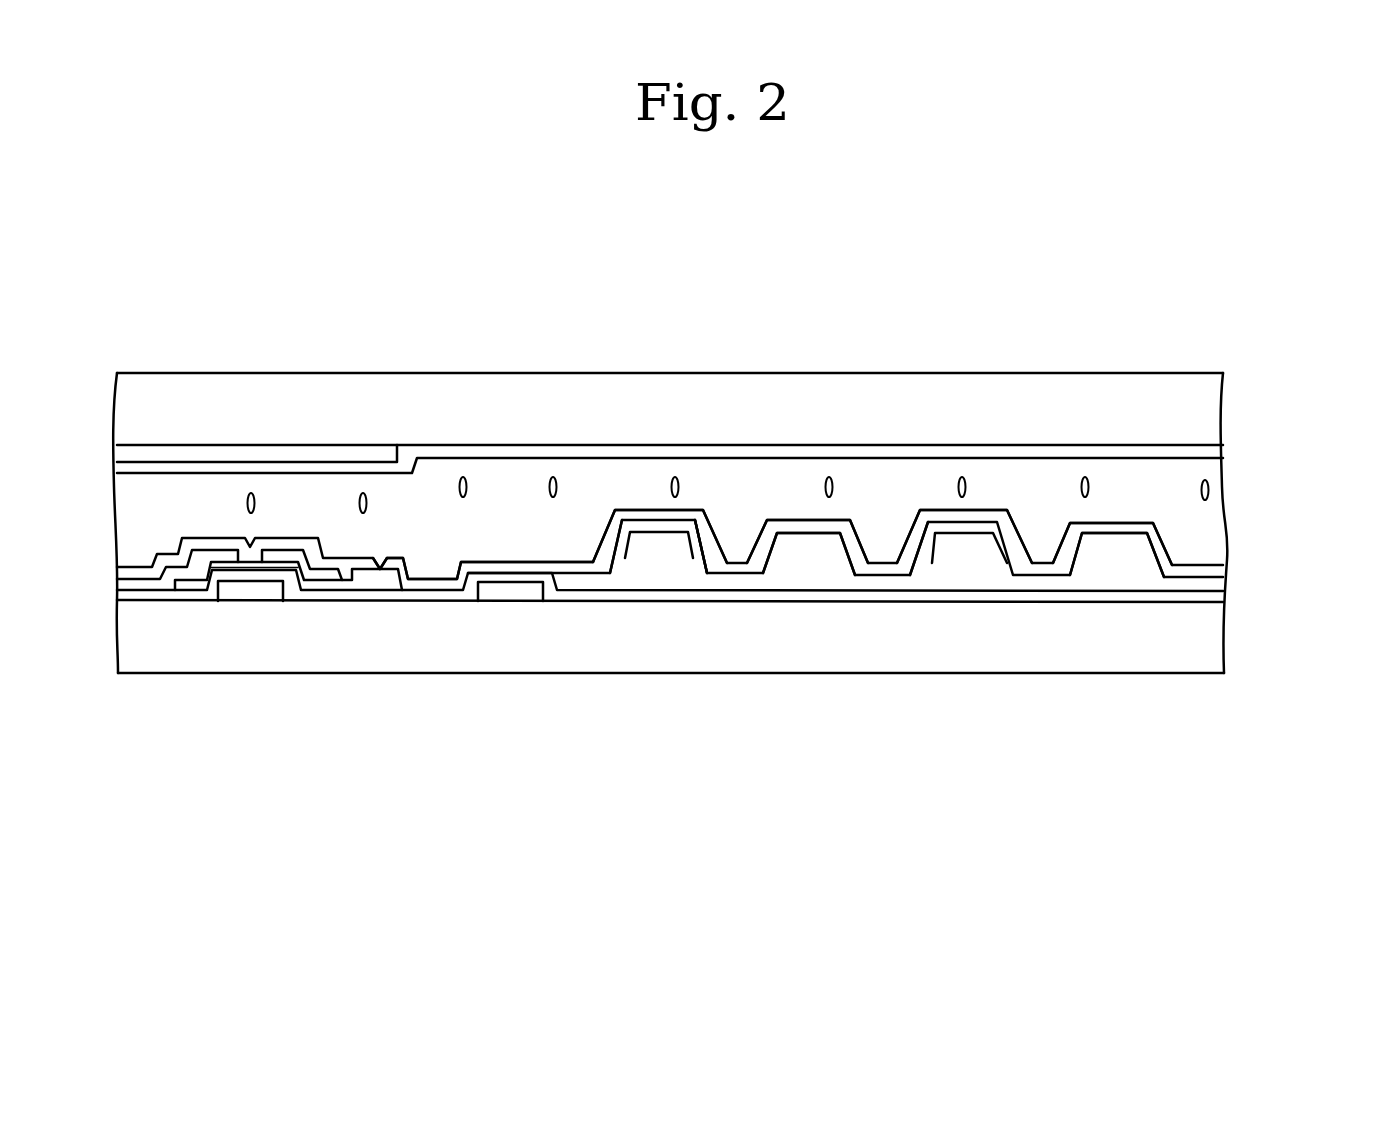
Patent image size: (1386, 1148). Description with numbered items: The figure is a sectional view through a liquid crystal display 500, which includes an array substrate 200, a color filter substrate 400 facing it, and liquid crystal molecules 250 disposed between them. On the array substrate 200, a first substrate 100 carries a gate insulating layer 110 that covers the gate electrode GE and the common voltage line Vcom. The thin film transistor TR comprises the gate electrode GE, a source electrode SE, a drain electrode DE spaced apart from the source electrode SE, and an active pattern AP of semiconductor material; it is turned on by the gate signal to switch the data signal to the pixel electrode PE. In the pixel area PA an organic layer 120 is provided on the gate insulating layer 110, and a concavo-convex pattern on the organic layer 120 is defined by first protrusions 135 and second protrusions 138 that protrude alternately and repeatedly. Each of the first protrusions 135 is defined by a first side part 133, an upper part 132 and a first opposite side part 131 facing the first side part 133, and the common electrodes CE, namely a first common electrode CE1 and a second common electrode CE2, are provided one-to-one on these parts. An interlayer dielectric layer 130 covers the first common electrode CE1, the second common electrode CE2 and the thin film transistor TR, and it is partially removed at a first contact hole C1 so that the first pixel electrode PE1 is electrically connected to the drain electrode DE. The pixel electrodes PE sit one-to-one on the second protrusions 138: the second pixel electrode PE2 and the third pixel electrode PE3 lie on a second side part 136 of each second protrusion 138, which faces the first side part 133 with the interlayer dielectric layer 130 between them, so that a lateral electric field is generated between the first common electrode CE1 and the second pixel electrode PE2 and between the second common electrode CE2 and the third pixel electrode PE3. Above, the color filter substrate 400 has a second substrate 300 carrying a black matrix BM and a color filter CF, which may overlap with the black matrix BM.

The liquid crystal display 500 is at (1237, 224).
The color filter substrate 400 is at (1318, 393).
The second substrate 300 is at (1213, 410).
The color filter CF is at (1213, 455).
The black matrix BM is at (125, 452).
The liquid crystal molecules 250 is at (1209, 490).
The array substrate 200 is at (1318, 540).
The first substrate 100 is at (1213, 652).
The gate insulating layer 110 is at (1213, 592).
The organic layer 120 is at (1213, 580).
The interlayer dielectric layer 130 is at (1213, 570).
The gate electrode GE is at (257, 590).
The active pattern AP is at (188, 585).
The source electrode SE is at (148, 584).
The drain electrode DE is at (350, 585).
The thin film transistor TR is at (370, 734).
The first contact hole C1 is at (374, 551).
The common voltage line Vcom is at (508, 590).
The pixel electrodes PE is at (965, 300).
The first pixel electrode PE1 is at (393, 560).
The second pixel electrode PE2 is at (760, 540).
The third pixel electrode PE3 is at (1067, 542).
The first opposite side part 131 is at (622, 555).
The upper part 132 is at (657, 532).
The first side part 133 is at (696, 555).
The first protrusions 135 is at (735, 732).
The second side part 136 is at (777, 553).
The second protrusions 138 is at (830, 562).
The first common electrode CE1 is at (708, 567).
The second common electrode CE2 is at (915, 568).
The common electrodes CE is at (915, 792).
The pixel area PA is at (1222, 673).